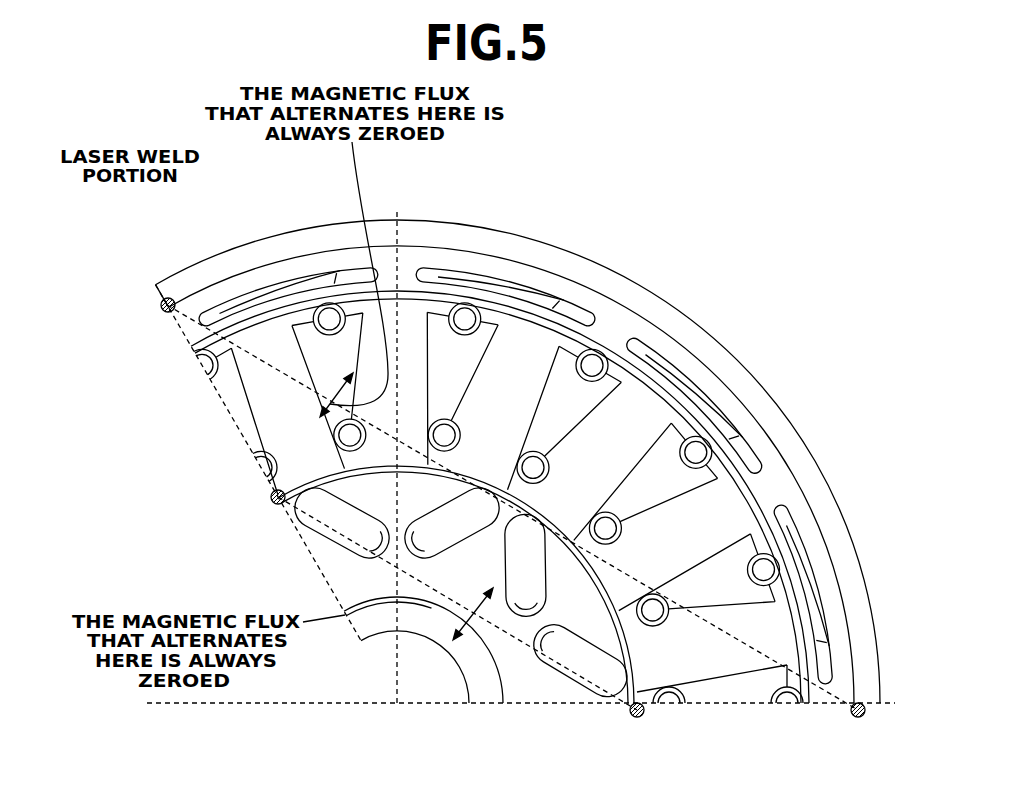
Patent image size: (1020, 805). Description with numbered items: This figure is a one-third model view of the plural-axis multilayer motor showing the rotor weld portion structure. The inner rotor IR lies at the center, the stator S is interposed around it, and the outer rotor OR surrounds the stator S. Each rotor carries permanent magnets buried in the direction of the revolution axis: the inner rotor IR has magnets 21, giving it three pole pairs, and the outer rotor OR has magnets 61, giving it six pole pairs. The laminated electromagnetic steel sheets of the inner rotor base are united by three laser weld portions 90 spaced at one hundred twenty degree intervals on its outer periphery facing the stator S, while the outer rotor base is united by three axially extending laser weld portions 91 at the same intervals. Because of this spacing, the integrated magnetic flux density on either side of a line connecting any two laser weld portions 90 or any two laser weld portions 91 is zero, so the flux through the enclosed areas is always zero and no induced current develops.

The permanent magnet 21 is at (368, 540).
The permanent magnet 61 is at (300, 275).
The laser weld portion 90 is at (271, 497).
The laser weld portion 91 is at (166, 290).
The outer rotor OR is at (165, 339).
The stator S is at (224, 444).
The inner rotor IR is at (289, 544).